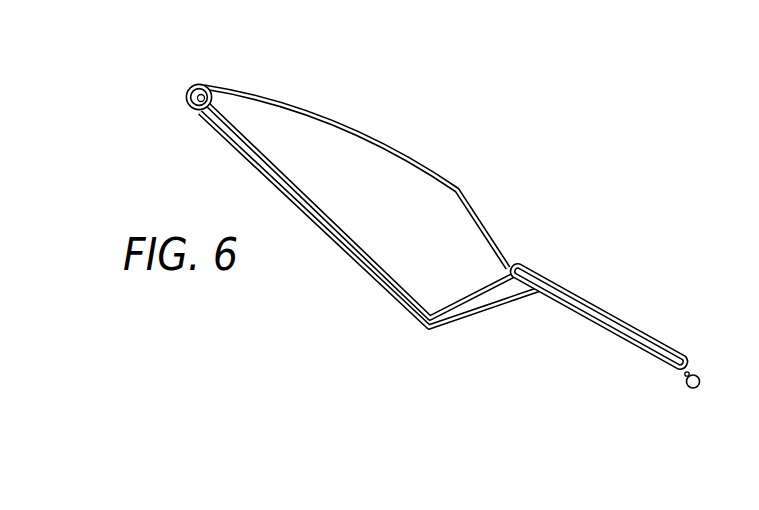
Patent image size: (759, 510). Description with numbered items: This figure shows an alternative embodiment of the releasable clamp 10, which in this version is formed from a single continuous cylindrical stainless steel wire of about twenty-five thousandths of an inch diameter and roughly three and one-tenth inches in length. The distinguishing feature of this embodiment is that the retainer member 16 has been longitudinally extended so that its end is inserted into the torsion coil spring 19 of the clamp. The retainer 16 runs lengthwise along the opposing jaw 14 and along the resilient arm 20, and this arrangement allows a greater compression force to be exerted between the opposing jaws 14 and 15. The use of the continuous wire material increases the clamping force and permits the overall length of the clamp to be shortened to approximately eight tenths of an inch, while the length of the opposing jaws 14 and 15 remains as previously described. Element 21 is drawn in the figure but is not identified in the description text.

The releasable clamp 10 is at (444, 209).
The opposing jaw 14 is at (648, 337).
The opposing jaw 15 is at (686, 378).
The retainer member 16 is at (347, 262).
The torsion coil spring 19 is at (198, 80).
The resilient arm 20 is at (362, 249).
The upper arm wire 21 is at (333, 123).